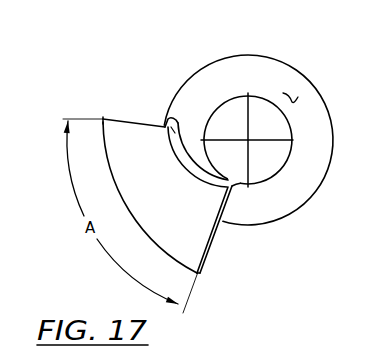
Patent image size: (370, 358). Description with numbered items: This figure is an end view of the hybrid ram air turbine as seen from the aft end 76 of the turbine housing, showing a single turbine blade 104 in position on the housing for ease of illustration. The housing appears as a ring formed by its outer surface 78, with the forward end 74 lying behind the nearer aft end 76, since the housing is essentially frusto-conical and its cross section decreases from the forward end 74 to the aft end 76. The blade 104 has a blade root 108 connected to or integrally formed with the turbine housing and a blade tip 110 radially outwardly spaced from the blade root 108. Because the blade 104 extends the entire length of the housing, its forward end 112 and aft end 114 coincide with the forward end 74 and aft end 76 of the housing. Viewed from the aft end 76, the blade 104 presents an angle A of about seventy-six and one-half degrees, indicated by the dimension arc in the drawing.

The forward end 74 is at (250, 55).
The aft end 76 is at (282, 167).
The outer surface 78 is at (298, 97).
The turbine blade 104 is at (120, 73).
The blade root 108 is at (165, 125).
The blade tip 110 is at (190, 297).
The forward end 112 is at (107, 117).
The aft end 114 is at (213, 240).